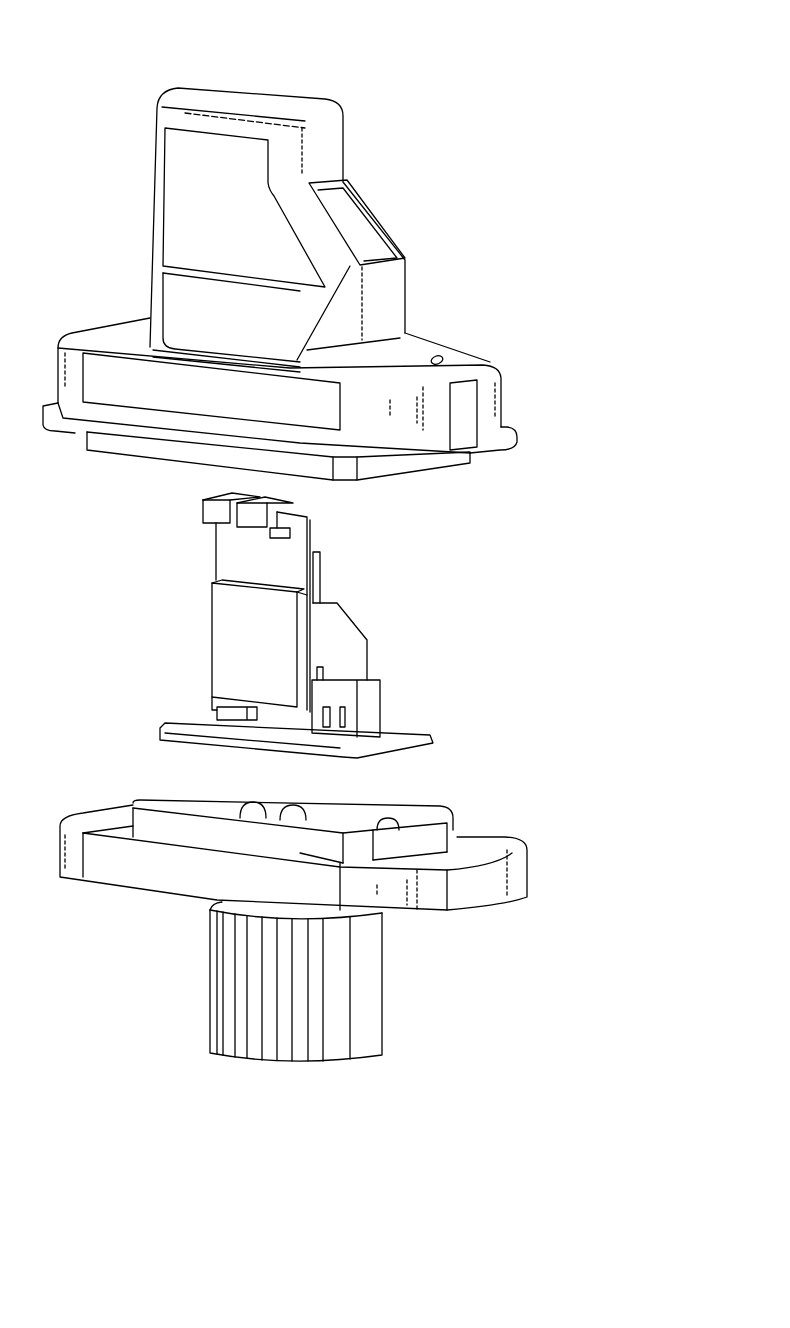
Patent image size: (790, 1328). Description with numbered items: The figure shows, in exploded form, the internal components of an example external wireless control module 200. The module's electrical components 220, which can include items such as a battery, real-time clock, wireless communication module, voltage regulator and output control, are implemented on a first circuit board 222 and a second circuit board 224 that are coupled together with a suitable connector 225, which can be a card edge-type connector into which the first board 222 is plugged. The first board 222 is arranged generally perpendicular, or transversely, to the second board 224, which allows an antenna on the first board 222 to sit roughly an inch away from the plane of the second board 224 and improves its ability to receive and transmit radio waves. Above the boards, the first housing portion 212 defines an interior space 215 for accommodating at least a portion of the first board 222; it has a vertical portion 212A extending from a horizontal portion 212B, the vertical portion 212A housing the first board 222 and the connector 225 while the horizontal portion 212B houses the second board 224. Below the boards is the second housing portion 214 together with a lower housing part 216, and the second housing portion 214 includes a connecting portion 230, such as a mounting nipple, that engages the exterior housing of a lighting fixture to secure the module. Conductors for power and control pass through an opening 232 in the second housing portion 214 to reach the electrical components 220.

The external wireless control module 200 is at (603, 100).
The first housing portion 212 is at (405, 251).
The vertical portion 212A is at (168, 168).
The horizontal portion 212B is at (500, 392).
The interior space 215 is at (108, 475).
The electrical components 220 is at (463, 578).
The first circuit board 222 is at (294, 548).
The second circuit board 224 is at (160, 728).
The connector 225 is at (367, 697).
The lower housing 216 is at (437, 787).
The second housing portion 214 is at (480, 907).
The connecting portion 230 is at (358, 1027).
The opening 232 is at (272, 1072).